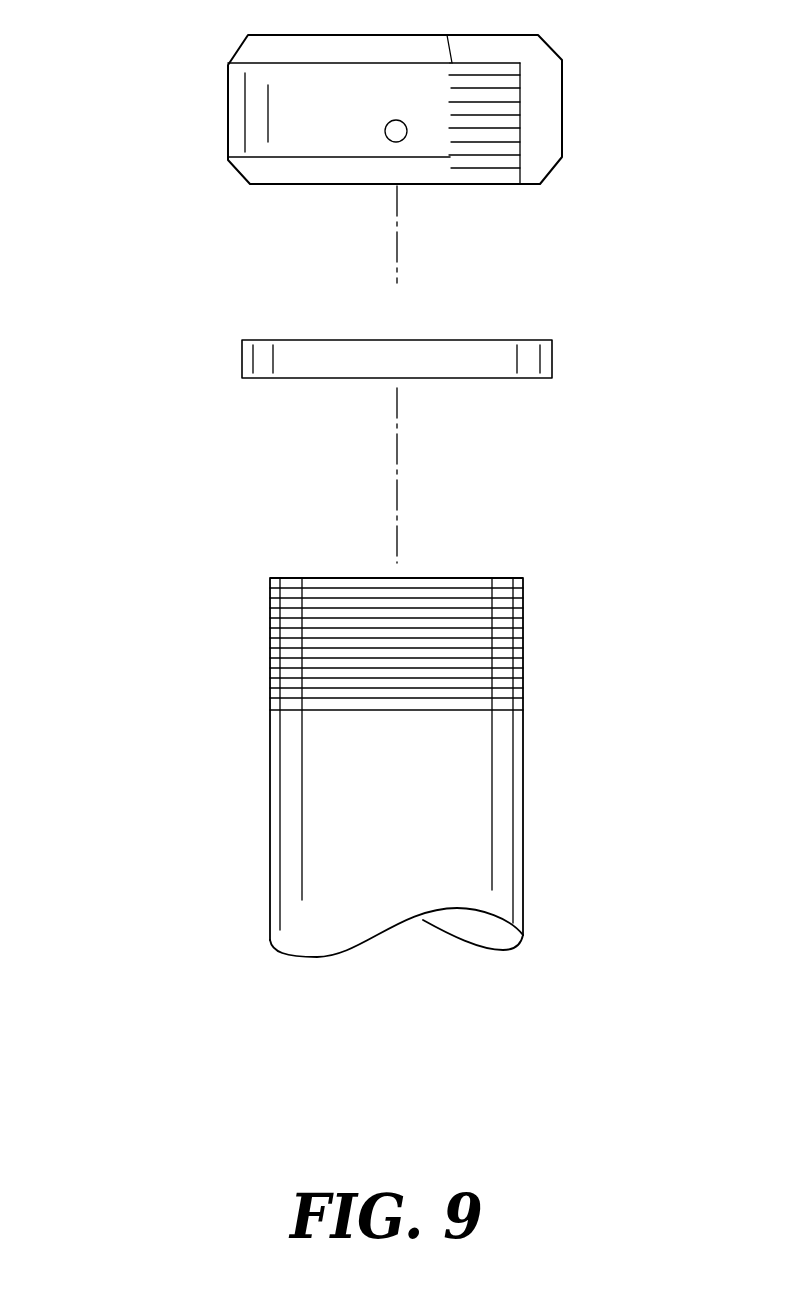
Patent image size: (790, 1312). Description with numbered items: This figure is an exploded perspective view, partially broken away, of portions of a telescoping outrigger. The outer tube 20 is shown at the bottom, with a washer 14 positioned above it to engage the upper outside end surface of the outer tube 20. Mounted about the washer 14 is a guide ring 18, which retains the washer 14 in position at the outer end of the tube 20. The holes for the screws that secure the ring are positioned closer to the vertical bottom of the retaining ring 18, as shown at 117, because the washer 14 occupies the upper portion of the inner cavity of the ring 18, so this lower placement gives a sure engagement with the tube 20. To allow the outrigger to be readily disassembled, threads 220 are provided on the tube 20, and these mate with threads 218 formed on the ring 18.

The guide ring 18 is at (562, 88).
The threads on the ring 218 is at (500, 184).
The screw hole position 117 is at (385, 132).
The washer 14 is at (552, 355).
The threads on the tube 220 is at (523, 605).
The outer tube 20 is at (523, 720).